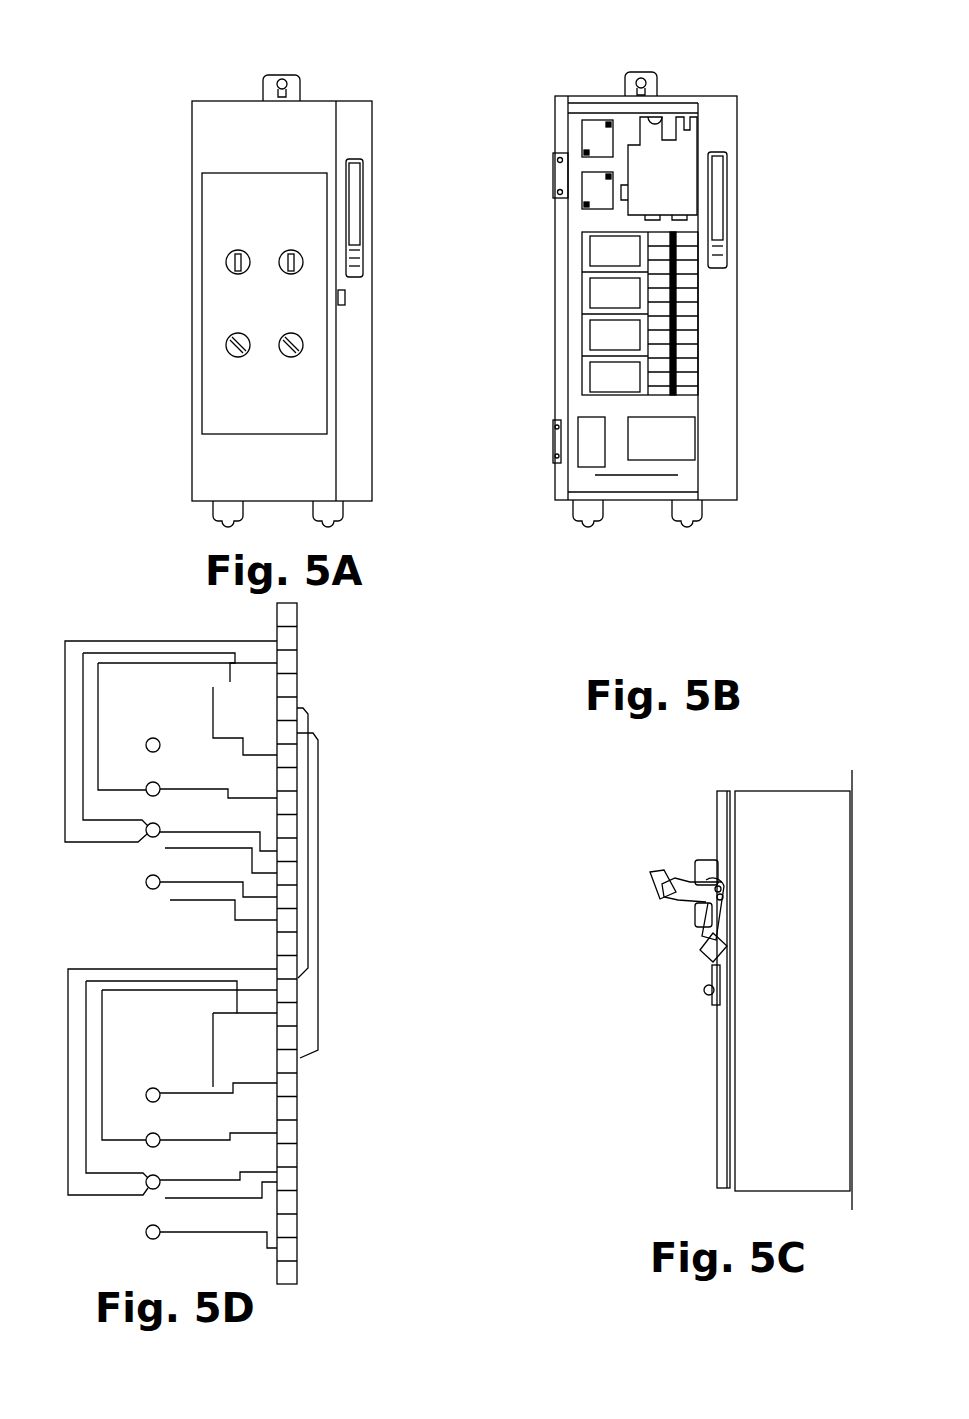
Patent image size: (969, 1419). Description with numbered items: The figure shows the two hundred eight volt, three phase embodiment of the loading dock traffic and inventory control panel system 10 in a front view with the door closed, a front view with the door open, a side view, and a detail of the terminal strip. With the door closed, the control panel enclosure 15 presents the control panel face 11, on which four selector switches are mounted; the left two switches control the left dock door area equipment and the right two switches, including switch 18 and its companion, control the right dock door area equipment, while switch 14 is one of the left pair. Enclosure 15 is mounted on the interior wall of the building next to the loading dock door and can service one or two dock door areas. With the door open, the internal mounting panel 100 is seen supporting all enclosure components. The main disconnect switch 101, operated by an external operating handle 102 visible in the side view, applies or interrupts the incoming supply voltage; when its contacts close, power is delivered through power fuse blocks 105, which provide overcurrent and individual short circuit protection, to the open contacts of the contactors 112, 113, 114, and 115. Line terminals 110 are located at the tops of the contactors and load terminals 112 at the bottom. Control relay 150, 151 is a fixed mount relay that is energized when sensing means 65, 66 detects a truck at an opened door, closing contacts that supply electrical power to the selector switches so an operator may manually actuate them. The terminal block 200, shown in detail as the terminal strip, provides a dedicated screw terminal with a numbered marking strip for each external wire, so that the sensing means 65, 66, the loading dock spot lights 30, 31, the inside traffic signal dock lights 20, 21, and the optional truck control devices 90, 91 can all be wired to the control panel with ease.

In FIG. 5A, the traffic and inventory control panel system 10 is at (395, 461).
In FIG. 5C, the traffic and inventory control panel system 10 is at (808, 767).
In FIG. 5A, the control panel face 11 is at (313, 188).
In FIG. 5A, the selector switch 14 is at (226, 345).
In FIG. 5A, the control panel enclosure 15 is at (192, 165).
In FIG. 5A, the selector switch 18 is at (303, 345).
In FIG. 5B, the internal mounting panel 100 is at (583, 215).
In FIG. 5B, the main disconnect switch 101 is at (675, 158).
In FIG. 5B, the external operating handle 102 is at (720, 188).
In FIG. 5C, the external operating handle 102 is at (657, 890).
In FIG. 5B, the power fuse blocks 105 is at (676, 406).
In FIG. 5B, the line terminals 110 is at (650, 406).
In FIG. 5B, the load terminals 112 is at (578, 406).
In FIG. 5B, the contactor 113 is at (605, 250).
In FIG. 5B, the contactor 114 is at (605, 290).
In FIG. 5B, the contactor 115 is at (605, 330).
In FIG. 5B, the control relay 150 is at (598, 120).
In FIG. 5B, the control relay 151 is at (598, 183).
In FIG. 5B, the terminal block 200 is at (685, 432).
In FIG. 5D, the terminal block 200 is at (375, 936).
In FIG. 5D, the sensing means 66 is at (156, 738).
In FIG. 5D, the loading dock spot light 30 is at (156, 782).
In FIG. 5D, the inside traffic signal dock light 20 is at (156, 823).
In FIG. 5D, the truck control notification automation system 90 is at (156, 875).
In FIG. 5D, the sensing means 65 is at (157, 1088).
In FIG. 5D, the loading dock spot light 31 is at (157, 1133).
In FIG. 5D, the inside traffic signal dock light 21 is at (157, 1175).
In FIG. 5D, the truck control notification automation system 91 is at (157, 1225).